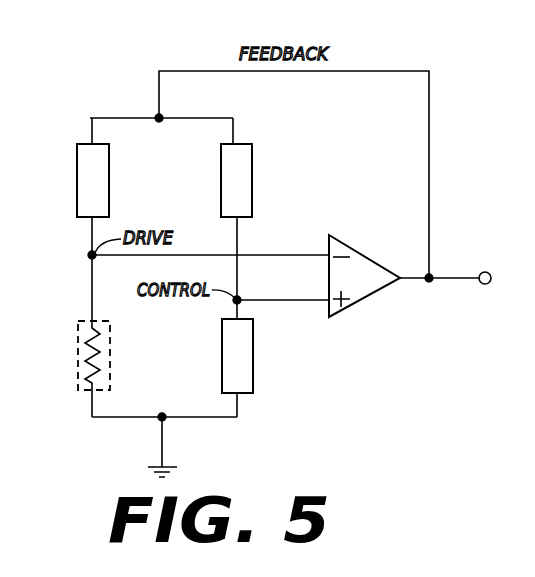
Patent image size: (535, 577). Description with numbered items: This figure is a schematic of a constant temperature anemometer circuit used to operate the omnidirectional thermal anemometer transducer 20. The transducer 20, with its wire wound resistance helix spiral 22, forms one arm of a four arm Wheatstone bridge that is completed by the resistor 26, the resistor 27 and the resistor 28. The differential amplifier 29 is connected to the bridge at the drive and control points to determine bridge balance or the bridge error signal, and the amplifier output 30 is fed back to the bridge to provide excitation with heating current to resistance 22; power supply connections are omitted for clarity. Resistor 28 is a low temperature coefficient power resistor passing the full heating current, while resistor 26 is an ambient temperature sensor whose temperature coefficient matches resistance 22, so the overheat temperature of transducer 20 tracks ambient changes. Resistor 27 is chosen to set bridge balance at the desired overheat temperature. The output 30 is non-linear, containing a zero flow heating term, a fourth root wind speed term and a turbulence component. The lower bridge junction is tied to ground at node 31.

The omnidirectional thermal anemometer transducer 20 is at (78, 390).
The wire wound resistance helix spiral 22 is at (90, 352).
The resistor 26 is at (240, 366).
The resistor 27 is at (243, 170).
The resistor 28 is at (100, 168).
The differential amplifier 29 is at (362, 271).
The output 30 is at (485, 271).
The ground node 31 is at (165, 421).